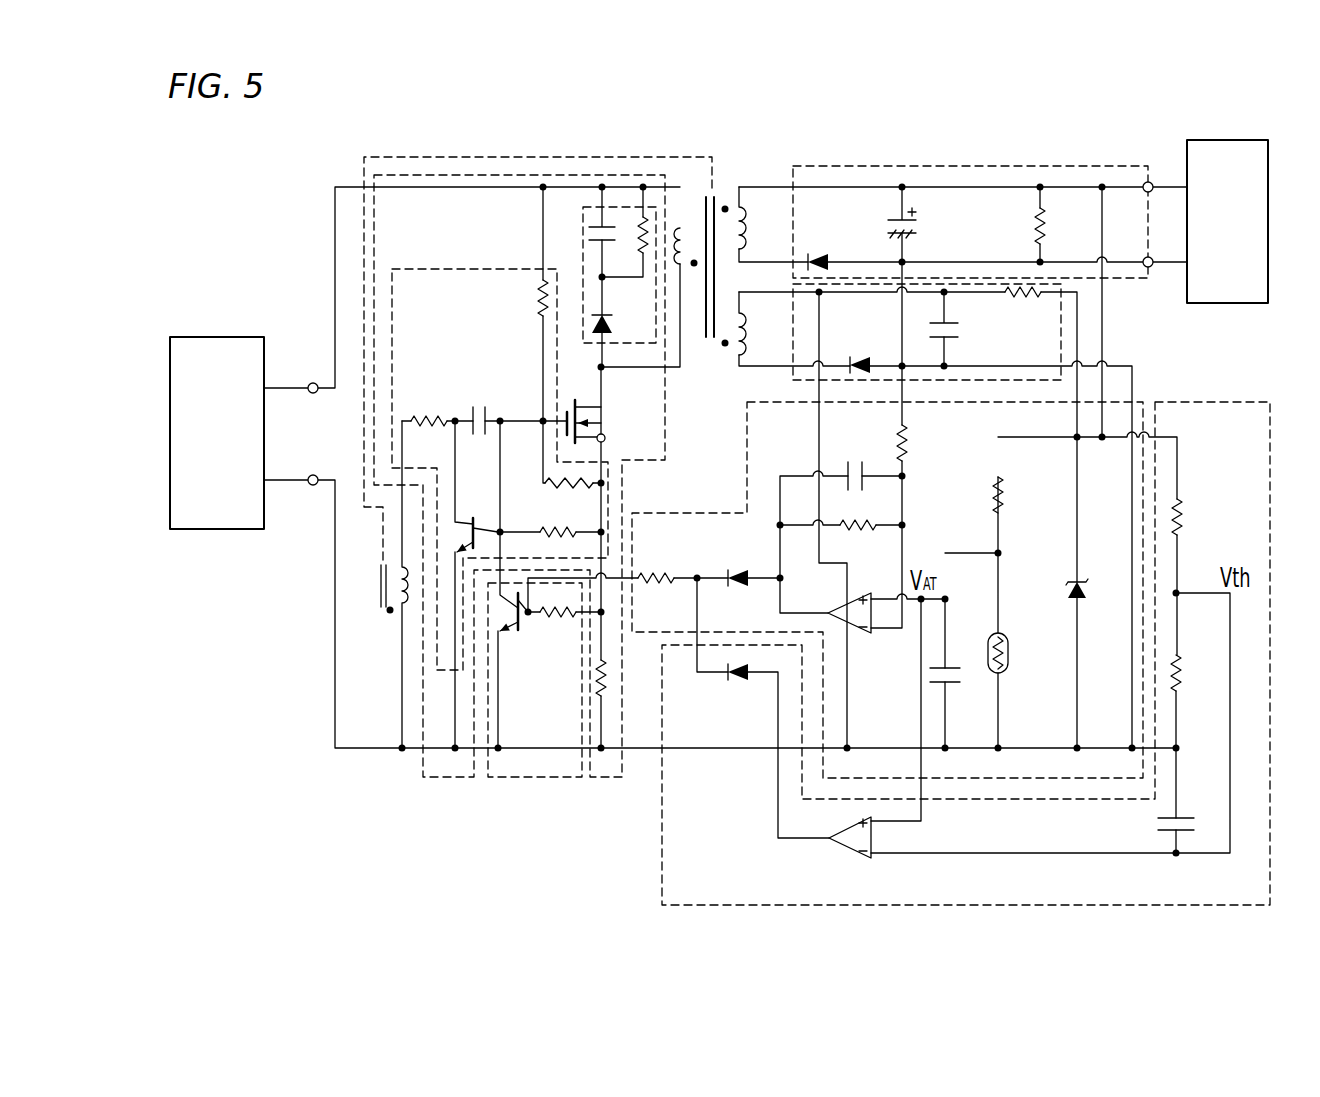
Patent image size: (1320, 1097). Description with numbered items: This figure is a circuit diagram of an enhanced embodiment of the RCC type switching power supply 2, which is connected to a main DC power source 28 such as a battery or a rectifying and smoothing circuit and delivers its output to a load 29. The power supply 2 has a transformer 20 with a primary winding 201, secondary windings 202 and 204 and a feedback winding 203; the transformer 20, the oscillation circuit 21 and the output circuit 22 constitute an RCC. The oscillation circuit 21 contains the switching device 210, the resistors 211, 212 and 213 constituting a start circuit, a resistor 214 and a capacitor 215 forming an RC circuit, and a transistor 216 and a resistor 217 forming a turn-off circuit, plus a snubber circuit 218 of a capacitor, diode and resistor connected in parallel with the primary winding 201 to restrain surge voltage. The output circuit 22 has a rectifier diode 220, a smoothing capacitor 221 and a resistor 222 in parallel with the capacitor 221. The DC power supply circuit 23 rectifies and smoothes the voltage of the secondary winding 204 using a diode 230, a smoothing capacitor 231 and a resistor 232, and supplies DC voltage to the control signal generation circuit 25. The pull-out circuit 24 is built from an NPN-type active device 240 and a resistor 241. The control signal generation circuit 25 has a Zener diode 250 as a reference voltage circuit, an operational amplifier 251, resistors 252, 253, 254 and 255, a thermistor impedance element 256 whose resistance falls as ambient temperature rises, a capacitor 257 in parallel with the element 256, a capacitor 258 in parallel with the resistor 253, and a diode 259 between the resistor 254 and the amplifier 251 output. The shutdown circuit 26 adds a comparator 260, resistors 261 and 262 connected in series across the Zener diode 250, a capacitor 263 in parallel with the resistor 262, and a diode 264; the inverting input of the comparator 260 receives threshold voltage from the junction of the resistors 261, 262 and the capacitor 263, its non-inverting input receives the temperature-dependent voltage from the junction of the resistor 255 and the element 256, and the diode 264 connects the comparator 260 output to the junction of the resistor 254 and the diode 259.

The switching power supply 2 is at (1040, 148).
The transformer 20 is at (716, 193).
The oscillation circuit 21 is at (425, 173).
The output circuit 22 is at (868, 163).
The DC power supply circuit 23 is at (1061, 338).
The pull-out circuit 24 is at (519, 778).
The control signal generation circuit 25 is at (693, 512).
The shutdown circuit 26 is at (1258, 400).
The main DC power source 28 is at (203, 353).
The load 29 is at (1225, 157).
The primary winding 201 is at (687, 228).
The secondary winding 202 is at (740, 217).
The feedback winding 203 is at (387, 612).
The secondary winding 204 is at (725, 347).
The switching device 210 is at (606, 421).
The resistor 211 is at (595, 687).
The resistor 212 is at (522, 251).
The resistor 213 is at (569, 499).
The resistor 214 is at (426, 401).
The capacitor 215 is at (480, 404).
The transistor 216 is at (470, 517).
The resistor 217 is at (548, 527).
The snubber circuit 218 is at (583, 233).
The rectifier diode 220 is at (820, 246).
The smoothing capacitor 221 is at (922, 215).
The resistor 222 is at (1060, 224).
The diode 230 is at (860, 350).
The smoothing capacitor 231 is at (958, 336).
The resistor 232 is at (1023, 310).
The active device 240 is at (510, 628).
The resistor 241 is at (557, 630).
The Zener diode 250 is at (1091, 605).
The operational amplifier 251 is at (857, 632).
The resistor 252 is at (923, 443).
The resistor 253 is at (858, 541).
The resistor 254 is at (657, 594).
The resistor 255 is at (1018, 495).
The impedance element 256 is at (1017, 653).
The capacitor 257 is at (958, 691).
The capacitor 258 is at (860, 461).
The diode 259 is at (740, 563).
The comparator 260 is at (848, 837).
The resistor 261 is at (1197, 517).
The resistor 262 is at (1196, 673).
The capacitor 263 is at (1187, 807).
The diode 264 is at (737, 689).